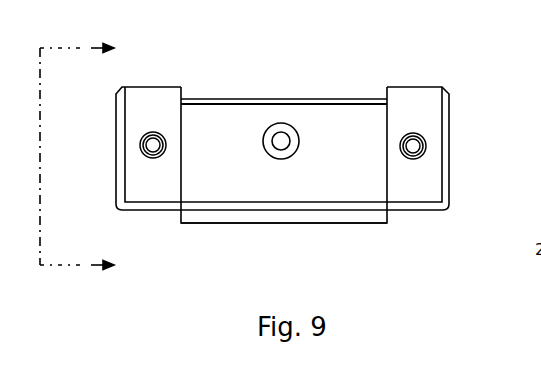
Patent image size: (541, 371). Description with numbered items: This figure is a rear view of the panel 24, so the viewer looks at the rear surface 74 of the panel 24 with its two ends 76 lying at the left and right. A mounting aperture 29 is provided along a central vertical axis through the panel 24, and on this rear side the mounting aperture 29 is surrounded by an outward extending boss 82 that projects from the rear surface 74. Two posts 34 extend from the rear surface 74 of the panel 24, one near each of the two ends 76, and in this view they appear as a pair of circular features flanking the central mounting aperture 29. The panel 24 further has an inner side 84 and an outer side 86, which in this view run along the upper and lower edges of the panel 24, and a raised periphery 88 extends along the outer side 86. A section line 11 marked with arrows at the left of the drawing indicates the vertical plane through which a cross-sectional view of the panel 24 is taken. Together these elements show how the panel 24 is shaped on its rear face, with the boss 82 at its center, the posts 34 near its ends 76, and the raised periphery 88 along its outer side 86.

The section line 11- 11 is at (77, 161).
The panel 24 is at (408, 66).
The mounting aperture 29 is at (284, 139).
The posts 34 is at (162, 133).
The rear surface 74 is at (237, 173).
The ends 76 is at (116, 148).
The outward extending boss 82 is at (291, 153).
The inner side 84 is at (284, 99).
The outer side 86 is at (283, 223).
The raised periphery 88 is at (388, 218).